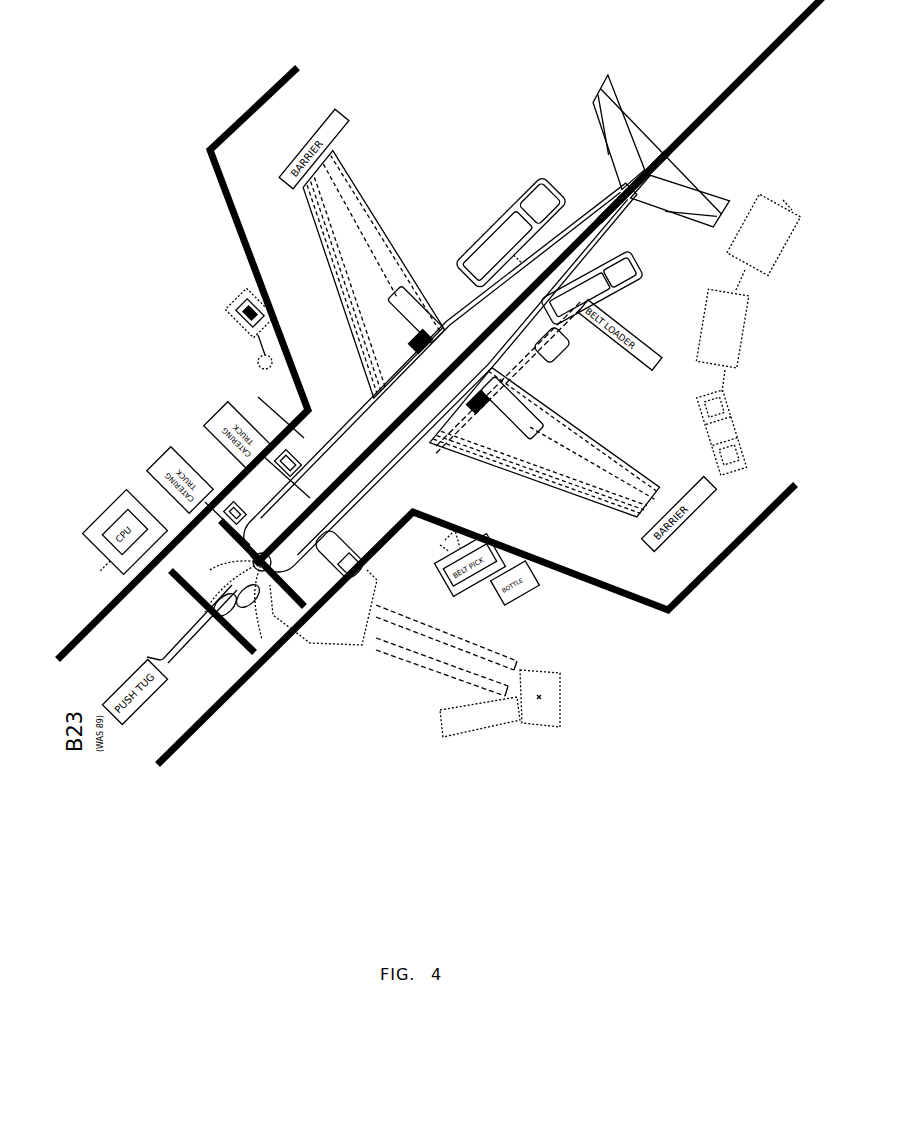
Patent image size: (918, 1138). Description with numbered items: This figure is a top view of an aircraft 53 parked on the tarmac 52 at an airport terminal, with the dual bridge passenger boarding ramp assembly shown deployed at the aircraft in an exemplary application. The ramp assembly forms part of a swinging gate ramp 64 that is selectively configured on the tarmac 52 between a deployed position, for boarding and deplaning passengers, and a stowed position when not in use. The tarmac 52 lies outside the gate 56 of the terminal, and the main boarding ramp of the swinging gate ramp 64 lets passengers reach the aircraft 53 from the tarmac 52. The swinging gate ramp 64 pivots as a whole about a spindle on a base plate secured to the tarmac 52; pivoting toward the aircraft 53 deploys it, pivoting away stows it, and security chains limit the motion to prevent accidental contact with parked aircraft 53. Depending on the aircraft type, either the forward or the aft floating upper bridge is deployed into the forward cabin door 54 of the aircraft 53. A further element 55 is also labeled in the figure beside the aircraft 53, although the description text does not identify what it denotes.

The tarmac 52 is at (440, 381).
The aircraft 53 is at (355, 196).
The forward cabin door 54 is at (283, 652).
The ground service vehicle 55 is at (332, 533).
The gate 56 is at (505, 651).
The swinging gate ramp 64 is at (588, 686).